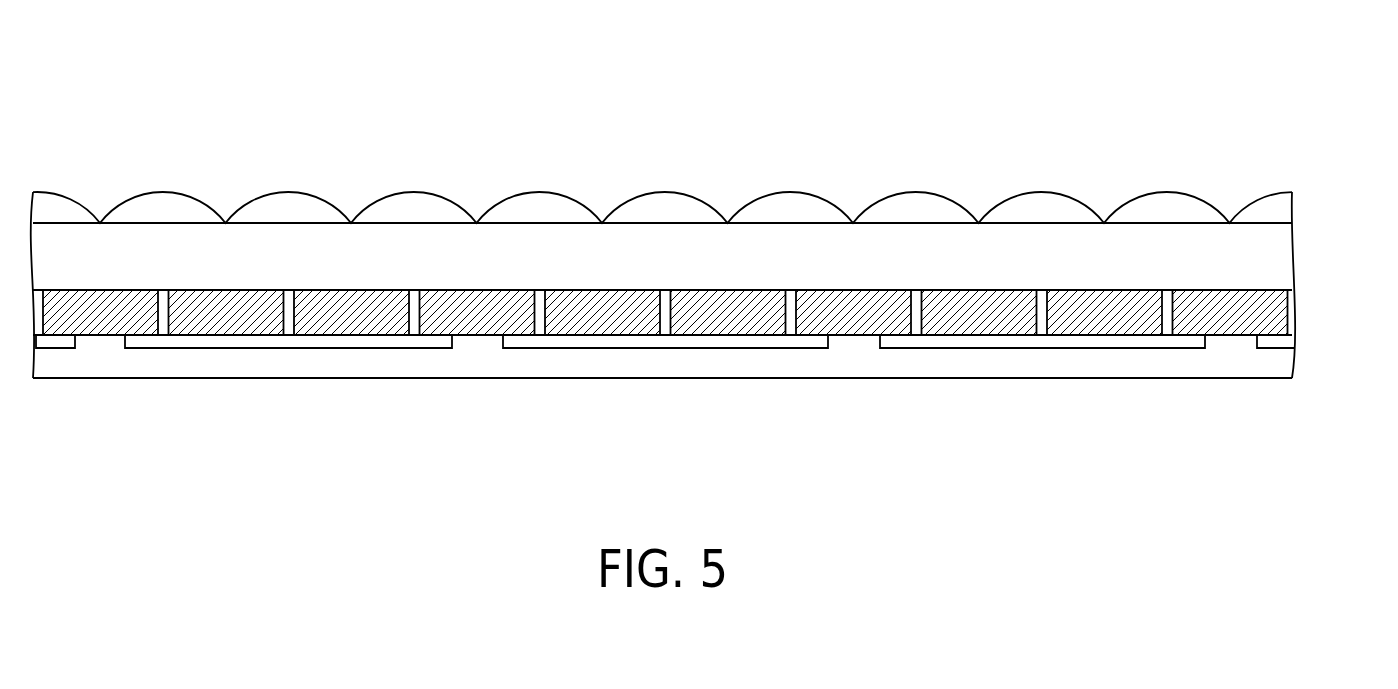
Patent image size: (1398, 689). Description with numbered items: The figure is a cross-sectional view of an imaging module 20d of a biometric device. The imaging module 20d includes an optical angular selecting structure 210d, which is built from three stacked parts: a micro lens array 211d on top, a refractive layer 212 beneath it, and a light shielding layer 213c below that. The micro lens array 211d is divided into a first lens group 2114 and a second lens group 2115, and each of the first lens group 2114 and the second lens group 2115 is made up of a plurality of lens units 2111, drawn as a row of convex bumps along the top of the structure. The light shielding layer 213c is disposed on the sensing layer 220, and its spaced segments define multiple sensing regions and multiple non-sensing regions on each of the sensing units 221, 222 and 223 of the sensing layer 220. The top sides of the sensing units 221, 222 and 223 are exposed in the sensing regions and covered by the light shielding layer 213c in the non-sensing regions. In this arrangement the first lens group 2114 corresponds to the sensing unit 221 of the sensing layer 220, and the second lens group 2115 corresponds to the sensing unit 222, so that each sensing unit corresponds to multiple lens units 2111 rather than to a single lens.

The imaging module 20d is at (128, 52).
The optical angular selecting structure 210d is at (1268, 182).
The micro lens array 211d is at (703, 105).
The lens unit 2111 is at (161, 205).
The first lens group 2114 is at (477, 152).
The second lens group 2115 is at (852, 150).
The refractive layer 212 is at (1260, 260).
The light shielding layer 213c is at (1262, 315).
The sensing layer 220 is at (947, 430).
The sensing unit 221 is at (392, 342).
The sensing unit 222 is at (655, 342).
The sensing unit 223 is at (943, 342).